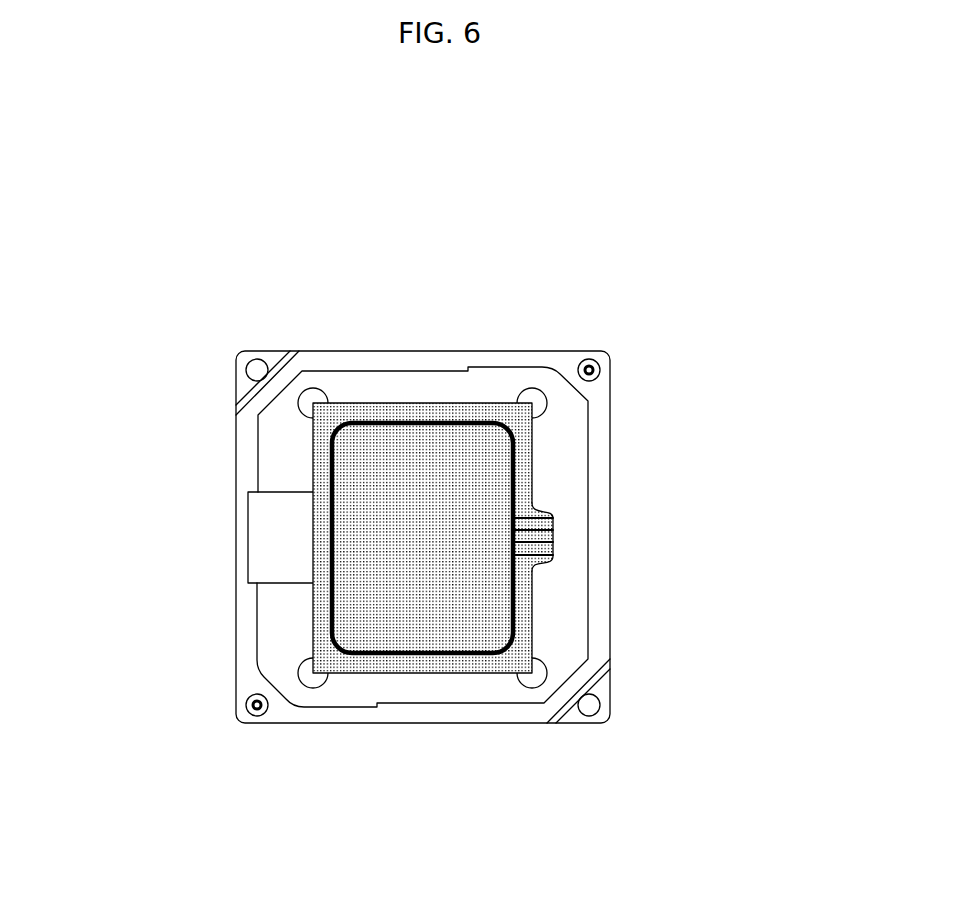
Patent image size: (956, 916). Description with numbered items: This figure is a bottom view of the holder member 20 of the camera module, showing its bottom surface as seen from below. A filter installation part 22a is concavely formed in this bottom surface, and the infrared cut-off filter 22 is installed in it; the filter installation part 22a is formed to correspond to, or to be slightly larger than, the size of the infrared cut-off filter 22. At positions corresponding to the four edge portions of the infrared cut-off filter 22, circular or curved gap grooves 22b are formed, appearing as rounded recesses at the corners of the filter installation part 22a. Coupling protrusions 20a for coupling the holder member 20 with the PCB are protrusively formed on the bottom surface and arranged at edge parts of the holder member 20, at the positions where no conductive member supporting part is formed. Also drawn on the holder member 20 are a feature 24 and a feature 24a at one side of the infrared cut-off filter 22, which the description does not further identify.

The holder member 20 is at (172, 222).
The coupling protrusion 20a is at (600, 369).
The infrared cut-off filter 22 is at (433, 622).
The filter installation part 22a is at (446, 412).
The gap groove 22b is at (528, 389).
The connector terminal 24 is at (510, 496).
The terminal pins 24a is at (545, 537).